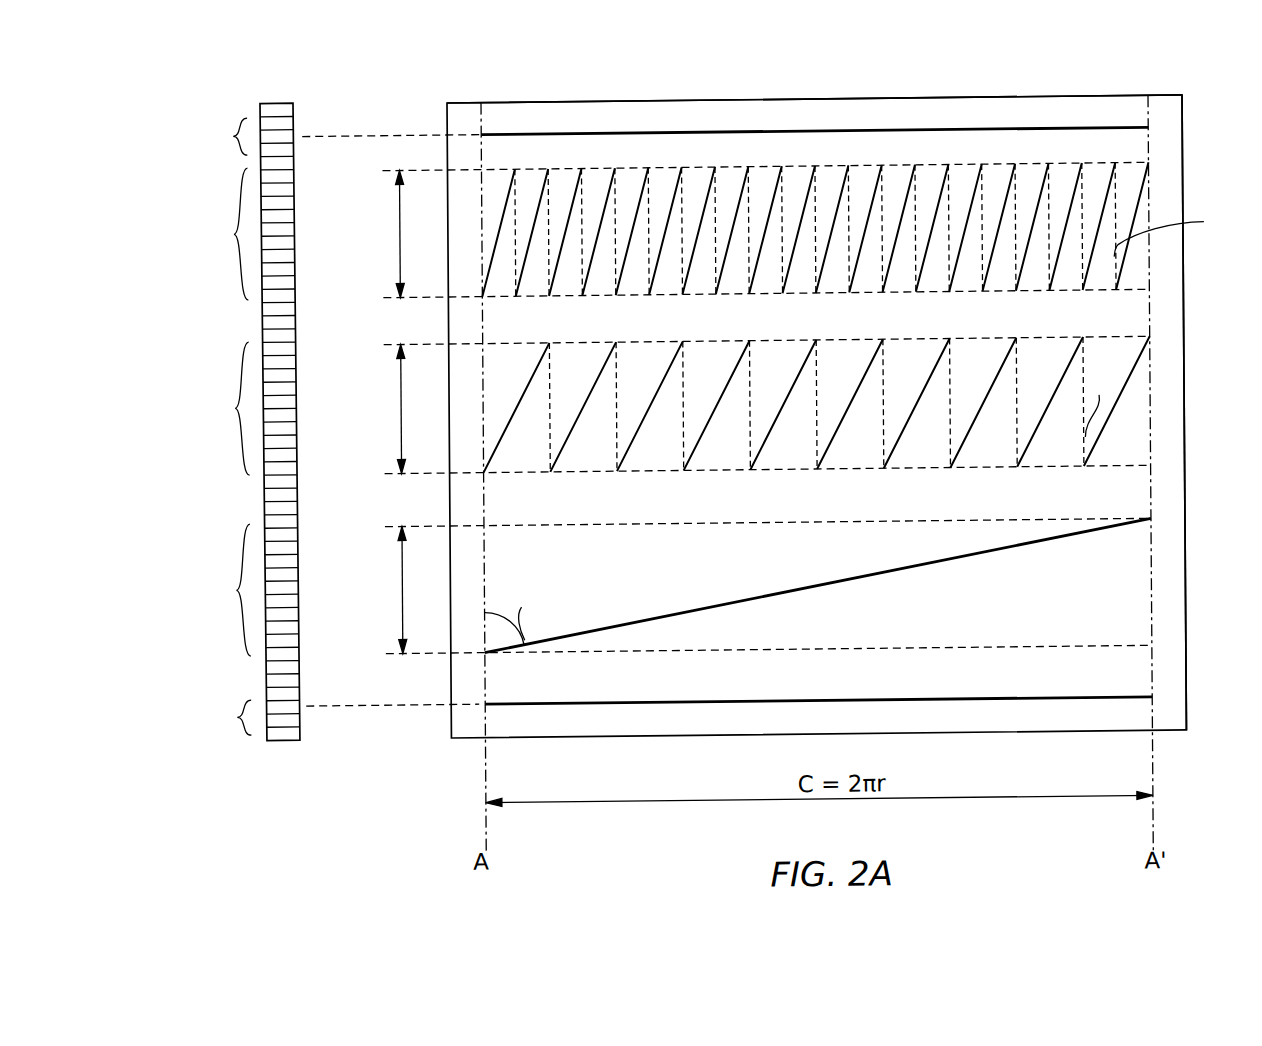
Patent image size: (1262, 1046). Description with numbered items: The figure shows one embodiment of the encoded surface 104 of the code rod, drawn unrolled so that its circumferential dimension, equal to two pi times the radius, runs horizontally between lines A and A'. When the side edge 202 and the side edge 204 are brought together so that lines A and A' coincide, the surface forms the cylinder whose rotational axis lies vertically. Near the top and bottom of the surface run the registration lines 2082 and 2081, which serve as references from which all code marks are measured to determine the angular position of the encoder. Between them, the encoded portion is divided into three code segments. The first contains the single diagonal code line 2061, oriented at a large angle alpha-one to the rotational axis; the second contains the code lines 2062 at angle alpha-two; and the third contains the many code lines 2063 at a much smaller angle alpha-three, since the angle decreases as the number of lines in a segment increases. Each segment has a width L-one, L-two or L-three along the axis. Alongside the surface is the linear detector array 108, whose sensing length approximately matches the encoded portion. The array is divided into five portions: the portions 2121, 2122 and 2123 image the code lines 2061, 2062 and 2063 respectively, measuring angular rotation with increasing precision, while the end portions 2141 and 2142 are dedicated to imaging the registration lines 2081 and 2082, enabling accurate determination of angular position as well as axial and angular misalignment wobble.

The encoded surface 104 is at (815, 103).
The linear detector array 108 is at (279, 741).
The side edge 202 is at (447, 118).
The side edge 204 is at (1182, 153).
The registration line 2082 is at (1067, 134).
The registration line 2081 is at (1055, 704).
The code lines of third code segment 2063 is at (1120, 276).
The code lines of second code segment 2062 is at (1106, 435).
The code line of first code segment 2061 is at (1017, 558).
The portion of linear detector array 2123 is at (661, 229).
The portion of linear detector array 2122 is at (663, 404).
The portion of linear detector array 2121 is at (668, 585).
The portion of linear detector array 2142 is at (328, 136).
The portion of linear detector array 2141 is at (333, 714).